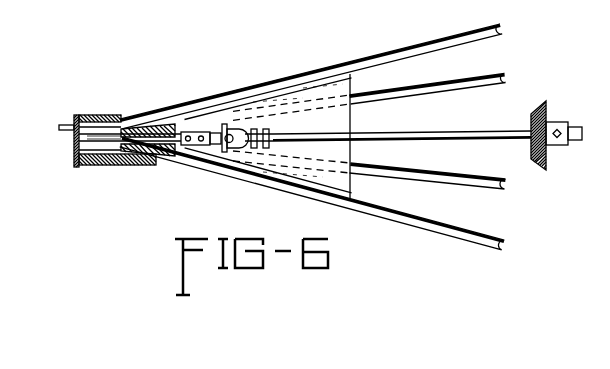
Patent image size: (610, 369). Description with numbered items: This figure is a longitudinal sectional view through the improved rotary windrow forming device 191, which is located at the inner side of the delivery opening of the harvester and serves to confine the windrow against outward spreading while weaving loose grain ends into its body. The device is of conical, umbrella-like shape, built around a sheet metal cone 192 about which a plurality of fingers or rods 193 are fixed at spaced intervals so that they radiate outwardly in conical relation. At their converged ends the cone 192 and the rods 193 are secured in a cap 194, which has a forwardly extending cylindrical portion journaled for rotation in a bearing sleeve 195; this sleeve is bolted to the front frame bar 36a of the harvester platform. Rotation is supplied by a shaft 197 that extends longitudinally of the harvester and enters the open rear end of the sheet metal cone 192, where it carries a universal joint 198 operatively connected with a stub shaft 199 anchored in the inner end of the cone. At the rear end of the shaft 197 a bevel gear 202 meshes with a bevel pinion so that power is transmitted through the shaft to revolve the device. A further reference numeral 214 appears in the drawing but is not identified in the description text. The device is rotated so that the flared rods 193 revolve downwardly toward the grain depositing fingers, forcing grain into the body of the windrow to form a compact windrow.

The front frame bar 36a is at (66, 152).
The rotary windrow forming device 191 is at (241, 70).
The sheet metal cone 192 is at (294, 86).
The fingers or rods 193 is at (495, 26).
The cap 194 is at (153, 107).
The bearing sleeve 195 is at (92, 107).
The shaft 197 is at (442, 125).
The universal joint 198 is at (216, 141).
The stub shaft 199 is at (140, 147).
The bevel gear 202 is at (530, 106).
The frame member 214 is at (299, 12).